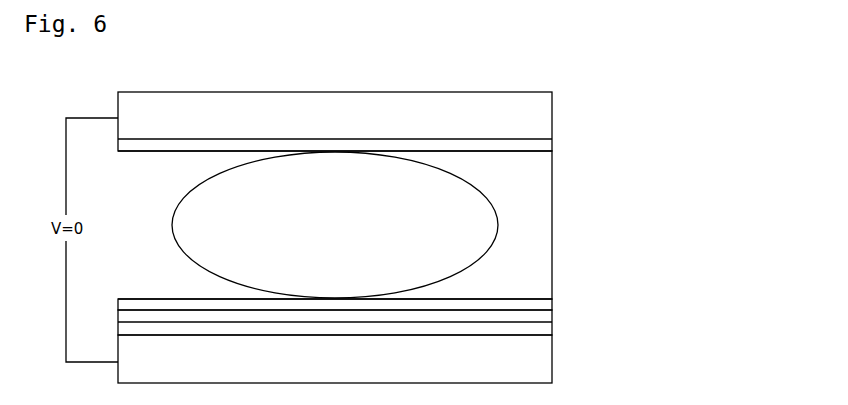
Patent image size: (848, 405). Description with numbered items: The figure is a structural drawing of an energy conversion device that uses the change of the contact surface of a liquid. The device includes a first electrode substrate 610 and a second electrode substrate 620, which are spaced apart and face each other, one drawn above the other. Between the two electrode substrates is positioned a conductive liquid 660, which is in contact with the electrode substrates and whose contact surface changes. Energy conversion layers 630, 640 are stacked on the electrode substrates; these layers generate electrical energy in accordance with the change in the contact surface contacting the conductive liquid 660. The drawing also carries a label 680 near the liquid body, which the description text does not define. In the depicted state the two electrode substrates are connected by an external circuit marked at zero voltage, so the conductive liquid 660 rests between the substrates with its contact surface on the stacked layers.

The first electrode substrate 610 is at (545, 116).
The second electrode substrate 620 is at (545, 359).
The energy conversion layer 630 is at (545, 329).
The energy conversion layer 640 is at (552, 304).
The conductive liquid 660 is at (552, 299).
The liquid droplet 680 is at (185, 193).